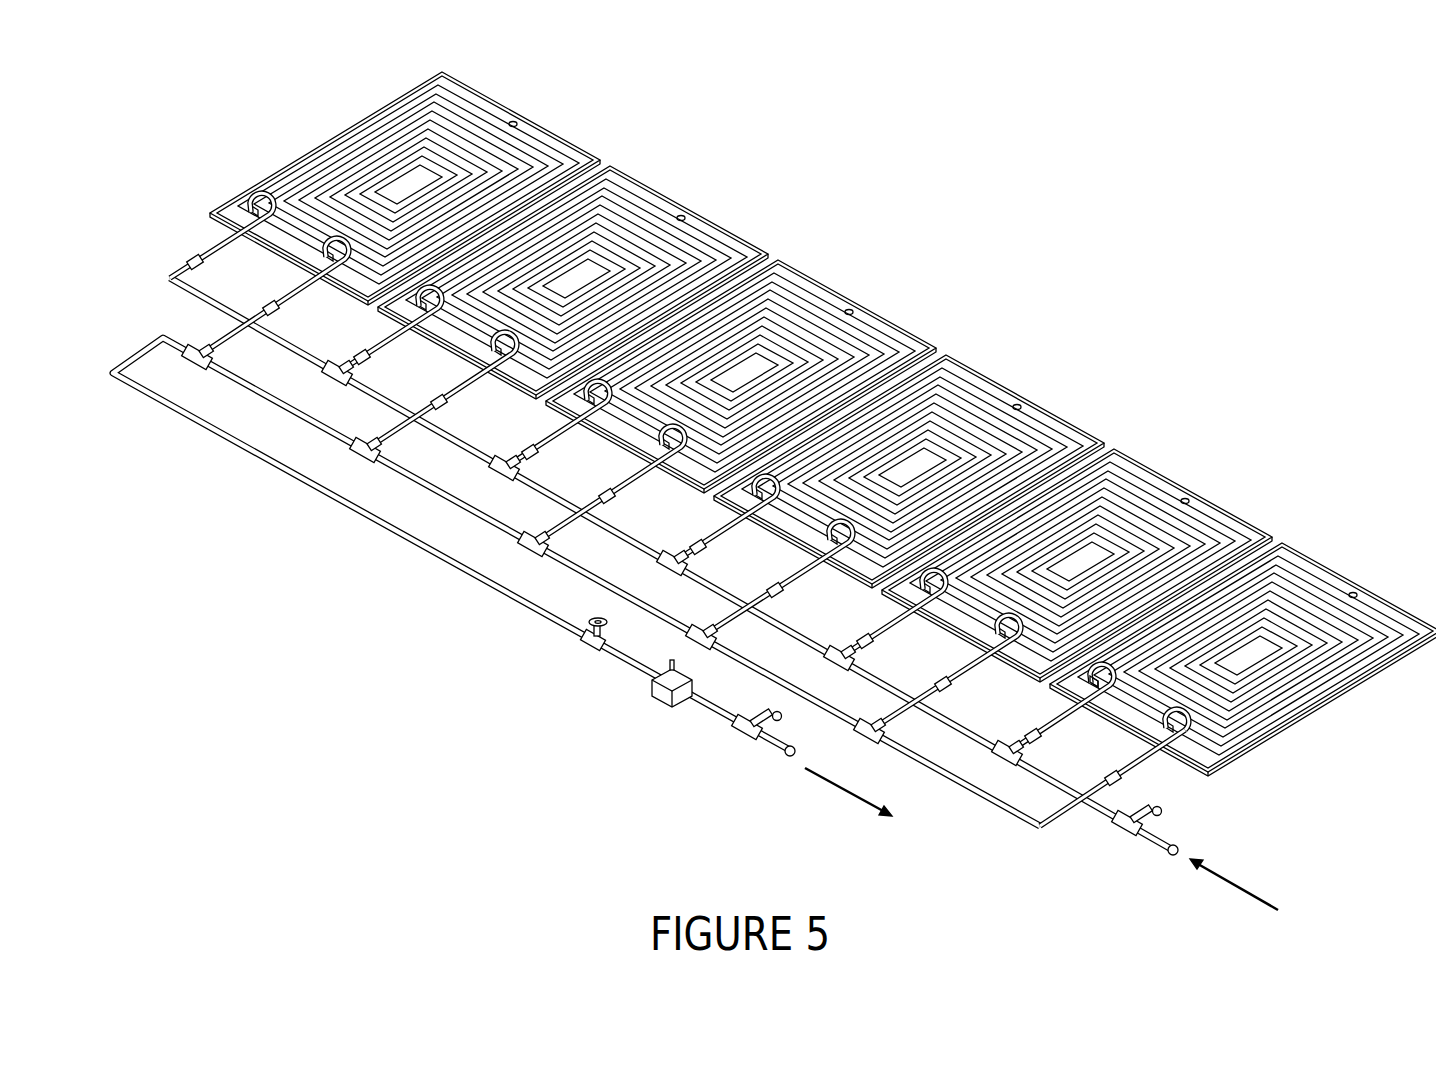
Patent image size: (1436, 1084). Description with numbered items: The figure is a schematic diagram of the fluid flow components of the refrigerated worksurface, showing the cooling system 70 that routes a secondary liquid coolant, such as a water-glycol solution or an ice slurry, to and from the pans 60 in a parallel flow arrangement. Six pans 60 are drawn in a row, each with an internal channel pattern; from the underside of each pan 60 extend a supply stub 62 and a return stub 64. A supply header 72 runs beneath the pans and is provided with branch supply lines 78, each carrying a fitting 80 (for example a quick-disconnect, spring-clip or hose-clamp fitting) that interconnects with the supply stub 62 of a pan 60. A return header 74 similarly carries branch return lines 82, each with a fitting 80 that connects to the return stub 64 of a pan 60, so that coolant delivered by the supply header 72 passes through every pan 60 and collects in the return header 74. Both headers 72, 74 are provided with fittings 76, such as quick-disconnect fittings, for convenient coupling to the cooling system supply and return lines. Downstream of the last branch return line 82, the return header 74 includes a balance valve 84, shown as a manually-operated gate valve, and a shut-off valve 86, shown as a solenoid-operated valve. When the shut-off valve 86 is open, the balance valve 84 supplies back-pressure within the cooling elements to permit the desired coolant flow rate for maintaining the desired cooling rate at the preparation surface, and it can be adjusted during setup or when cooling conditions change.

The pan 60 is at (470, 100).
The supply stub 62 is at (1045, 668).
The return stub 64 is at (1130, 738).
The cooling system 70 is at (700, 567).
The supply header 72 is at (1188, 845).
The return header 74 is at (295, 478).
The fitting 76 is at (745, 772).
The branch supply line 78 is at (1052, 735).
The fitting 80 is at (1031, 732).
The branch return line 82 is at (1162, 778).
The balance valve 84 is at (593, 650).
The shut-off valve 86 is at (660, 692).